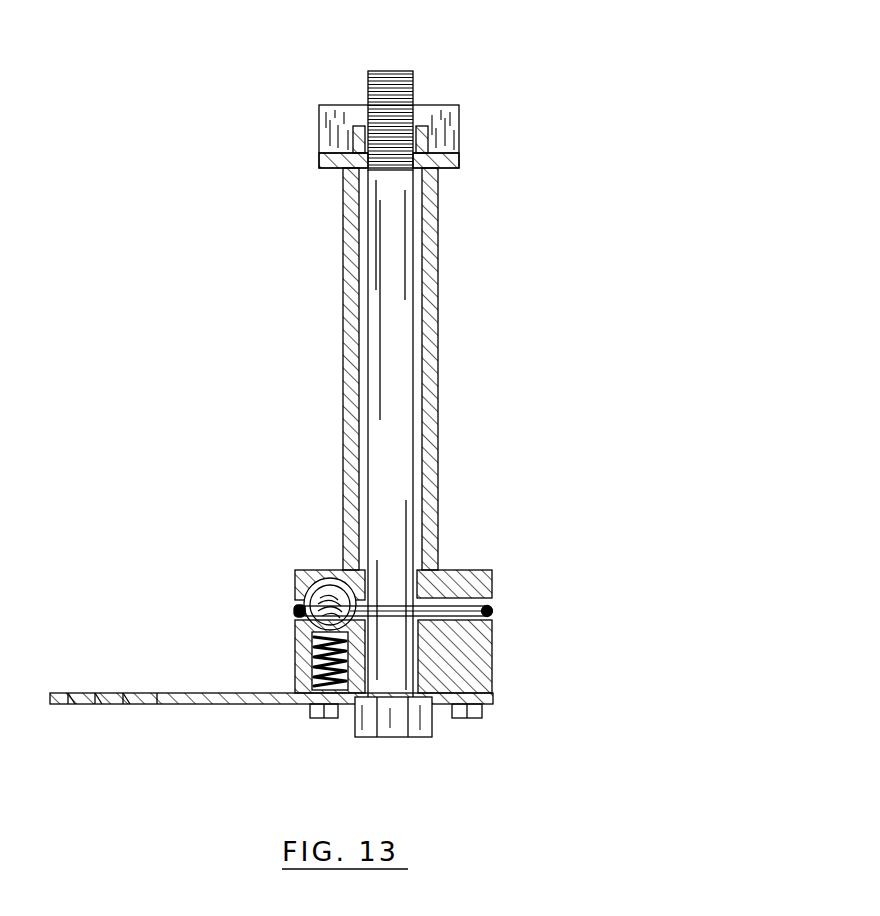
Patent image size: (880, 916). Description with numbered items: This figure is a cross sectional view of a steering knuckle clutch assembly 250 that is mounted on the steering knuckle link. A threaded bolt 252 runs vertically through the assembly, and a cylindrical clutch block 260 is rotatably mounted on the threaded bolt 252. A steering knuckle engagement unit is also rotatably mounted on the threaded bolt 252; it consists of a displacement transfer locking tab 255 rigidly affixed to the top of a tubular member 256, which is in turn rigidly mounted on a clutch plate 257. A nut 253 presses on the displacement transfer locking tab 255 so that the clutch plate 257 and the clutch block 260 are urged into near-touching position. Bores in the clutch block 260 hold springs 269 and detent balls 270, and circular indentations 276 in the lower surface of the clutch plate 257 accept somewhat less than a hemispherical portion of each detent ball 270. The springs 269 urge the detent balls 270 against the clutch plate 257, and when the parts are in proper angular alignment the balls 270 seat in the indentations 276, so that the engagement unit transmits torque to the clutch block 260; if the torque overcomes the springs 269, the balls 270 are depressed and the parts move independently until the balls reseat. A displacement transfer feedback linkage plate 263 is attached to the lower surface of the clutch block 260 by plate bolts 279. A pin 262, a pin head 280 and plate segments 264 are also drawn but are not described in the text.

The steering knuckle clutch assembly 250 is at (530, 350).
The threaded bolt 252 is at (412, 80).
The nut 253 is at (422, 138).
The displacement transfer locking tab 255 is at (457, 162).
The tubular member 256 is at (440, 258).
The clutch plate 257 is at (455, 575).
The clutch block 260 is at (488, 660).
The pin 262 is at (490, 612).
The displacement transfer feedback linkage plate 263 is at (245, 704).
The plate segments 264 is at (143, 704).
The springs 269 is at (320, 655).
The detent balls 270 is at (310, 600).
The circular indentations 276 is at (325, 583).
The plate bolts 279 is at (485, 716).
The pin head 280 is at (490, 598).